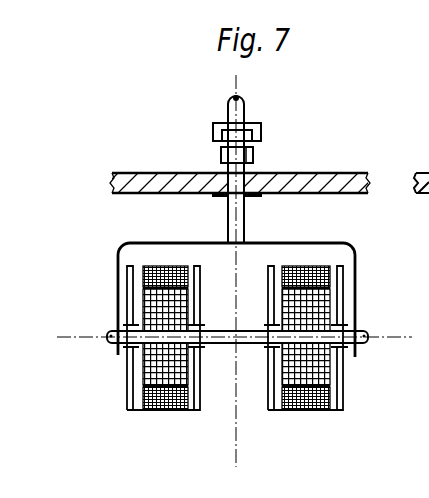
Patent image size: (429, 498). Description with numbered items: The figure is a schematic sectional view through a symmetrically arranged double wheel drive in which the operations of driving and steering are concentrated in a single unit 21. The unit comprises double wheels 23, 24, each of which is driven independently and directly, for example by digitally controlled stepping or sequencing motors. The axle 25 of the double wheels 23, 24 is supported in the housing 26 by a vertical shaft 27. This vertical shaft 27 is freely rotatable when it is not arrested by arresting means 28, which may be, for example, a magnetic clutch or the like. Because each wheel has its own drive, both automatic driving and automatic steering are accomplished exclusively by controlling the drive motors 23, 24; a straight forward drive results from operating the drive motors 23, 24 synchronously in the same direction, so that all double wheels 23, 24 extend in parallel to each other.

The single unit 21 is at (92, 275).
The double wheel 23 is at (167, 411).
The double wheel 24 is at (313, 411).
The axle 25 is at (365, 348).
The housing 26 is at (355, 183).
The vertical shaft 27 is at (245, 108).
The arresting means 28 is at (261, 132).